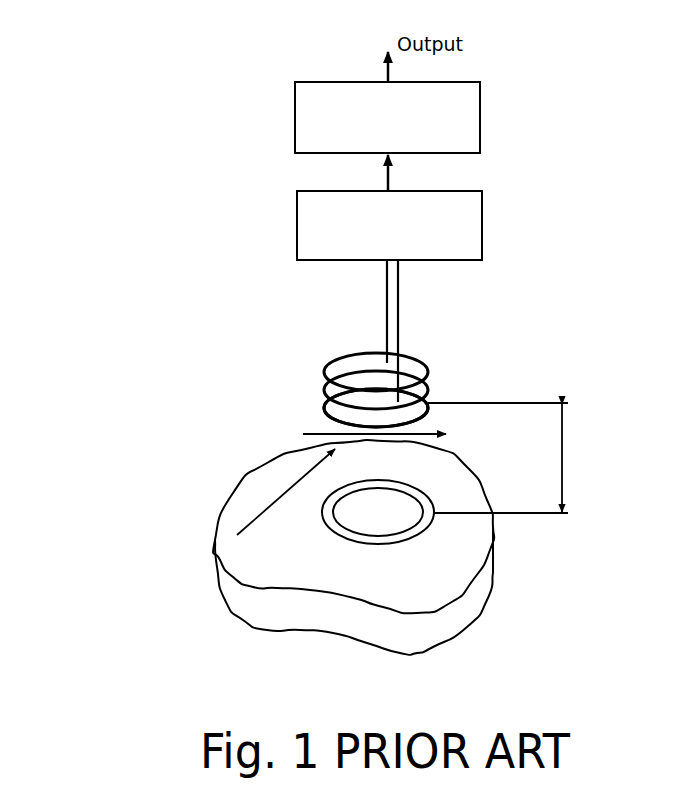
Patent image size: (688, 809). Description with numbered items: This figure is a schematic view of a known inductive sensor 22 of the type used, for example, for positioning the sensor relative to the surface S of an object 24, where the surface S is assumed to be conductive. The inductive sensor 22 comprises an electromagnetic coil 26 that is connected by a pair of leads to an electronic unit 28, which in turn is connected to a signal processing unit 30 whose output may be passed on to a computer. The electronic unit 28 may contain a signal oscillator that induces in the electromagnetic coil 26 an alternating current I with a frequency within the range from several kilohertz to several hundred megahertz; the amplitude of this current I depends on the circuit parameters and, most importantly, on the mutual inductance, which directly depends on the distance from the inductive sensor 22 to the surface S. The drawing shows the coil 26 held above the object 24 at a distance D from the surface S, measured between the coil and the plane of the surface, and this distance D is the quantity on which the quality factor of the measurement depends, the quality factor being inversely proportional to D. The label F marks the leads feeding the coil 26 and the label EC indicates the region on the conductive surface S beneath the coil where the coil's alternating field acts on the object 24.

The inductive sensor 22 is at (430, 347).
The object 24 is at (115, 404).
The electromagnetic coil 26 is at (432, 388).
The electronic unit 28 is at (487, 230).
The signal processing unit 30 is at (487, 112).
The surface S is at (247, 507).
The current I is at (237, 535).
The eddy currents EC is at (333, 533).
The distance D is at (515, 458).
The field F is at (376, 298).